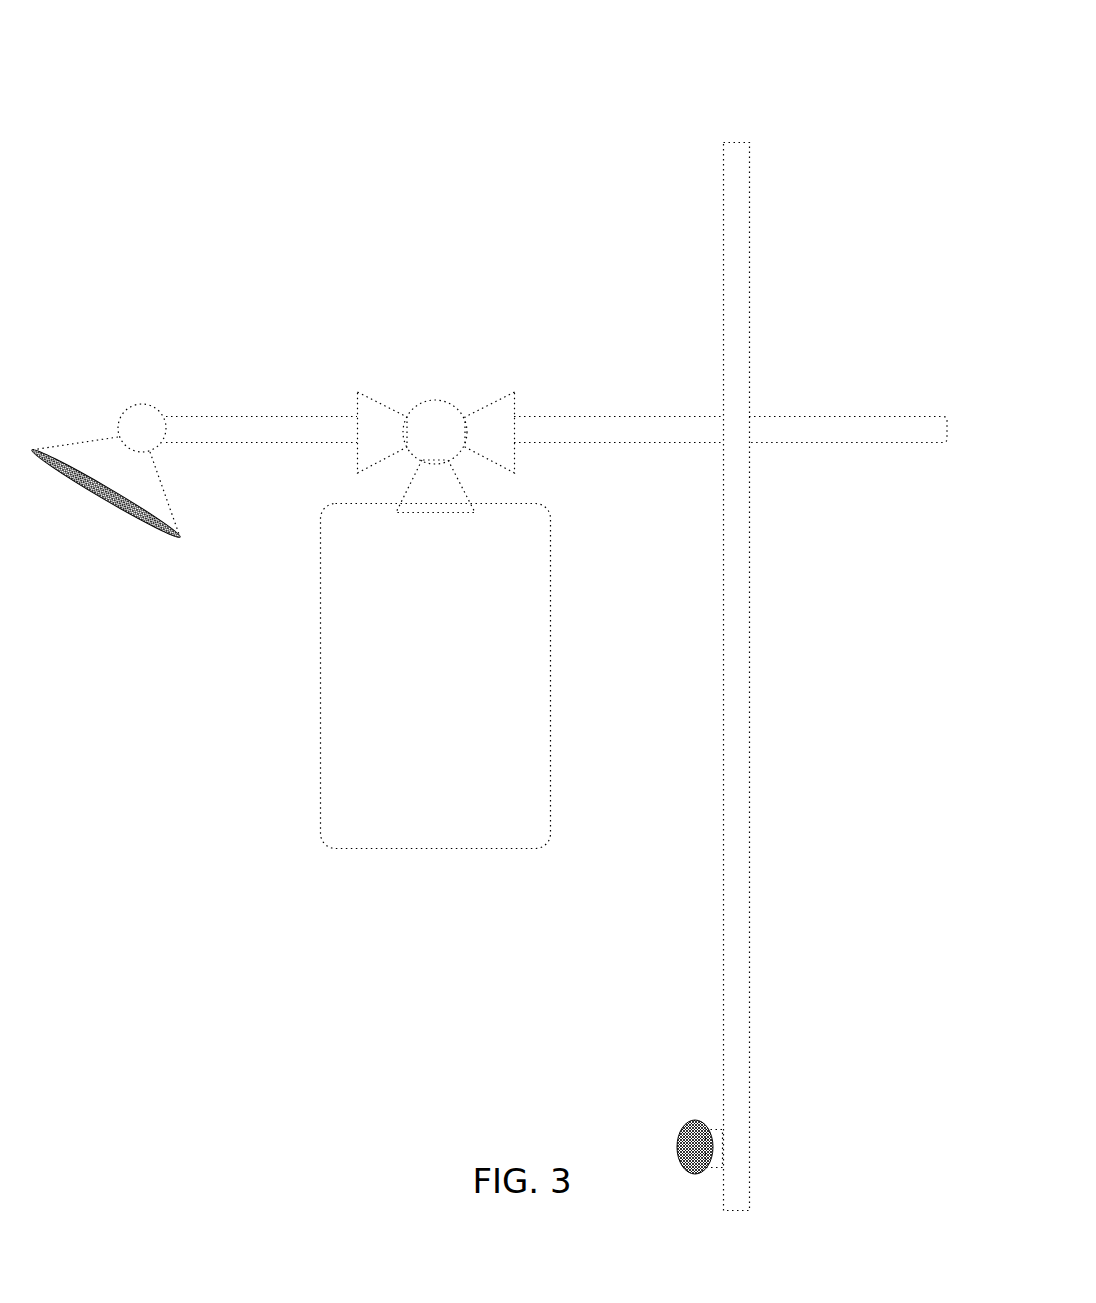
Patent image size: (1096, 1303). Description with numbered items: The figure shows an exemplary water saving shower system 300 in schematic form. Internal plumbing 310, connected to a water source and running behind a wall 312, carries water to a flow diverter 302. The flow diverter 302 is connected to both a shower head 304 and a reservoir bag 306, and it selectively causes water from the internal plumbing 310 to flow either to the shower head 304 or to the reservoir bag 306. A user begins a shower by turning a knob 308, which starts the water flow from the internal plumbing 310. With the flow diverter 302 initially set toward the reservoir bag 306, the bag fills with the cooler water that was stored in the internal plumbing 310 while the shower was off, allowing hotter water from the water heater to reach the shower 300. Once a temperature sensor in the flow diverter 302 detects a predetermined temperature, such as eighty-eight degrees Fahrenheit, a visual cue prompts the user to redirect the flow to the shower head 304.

The water saving shower system 300 is at (230, 1085).
The flow diverter 302 is at (433, 400).
The shower head 304 is at (33, 450).
The reservoir bag 306 is at (436, 848).
The knob 308 is at (678, 1127).
The internal plumbing 310 is at (876, 407).
The wall 312 is at (743, 140).